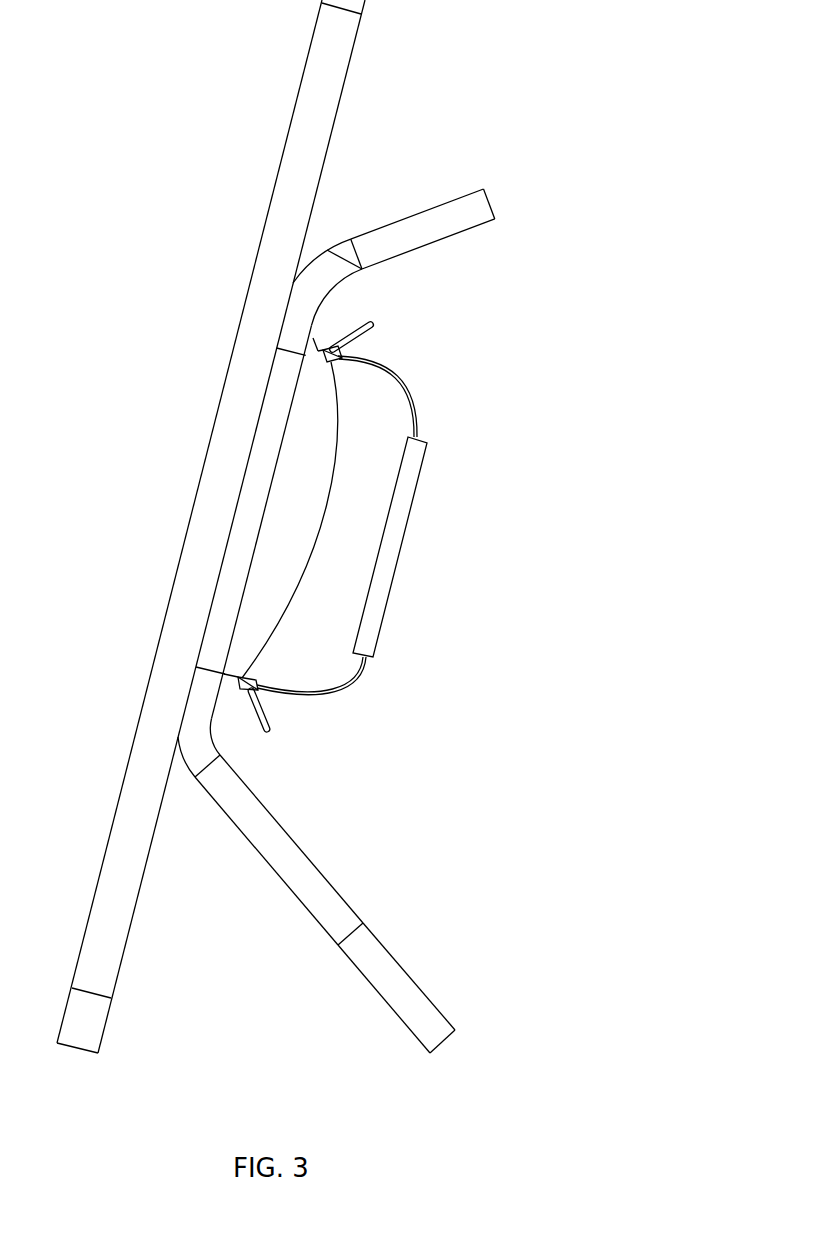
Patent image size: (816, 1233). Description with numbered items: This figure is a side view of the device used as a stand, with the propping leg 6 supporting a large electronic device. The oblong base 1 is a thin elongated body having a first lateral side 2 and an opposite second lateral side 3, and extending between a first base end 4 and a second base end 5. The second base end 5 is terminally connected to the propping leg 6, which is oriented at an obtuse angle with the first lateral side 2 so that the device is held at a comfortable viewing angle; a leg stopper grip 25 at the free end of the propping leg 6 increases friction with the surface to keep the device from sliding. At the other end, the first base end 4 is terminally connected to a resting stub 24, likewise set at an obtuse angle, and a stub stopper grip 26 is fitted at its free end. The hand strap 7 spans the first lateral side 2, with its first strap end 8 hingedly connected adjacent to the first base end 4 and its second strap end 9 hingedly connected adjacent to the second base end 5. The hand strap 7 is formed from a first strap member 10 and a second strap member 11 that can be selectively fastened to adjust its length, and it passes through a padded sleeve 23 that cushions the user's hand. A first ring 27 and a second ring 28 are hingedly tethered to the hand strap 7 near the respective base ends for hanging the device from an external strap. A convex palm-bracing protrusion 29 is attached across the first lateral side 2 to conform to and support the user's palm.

The oblong base 1 is at (230, 477).
The first lateral side 2 is at (278, 496).
The second lateral side 3 is at (225, 541).
The first base end 4 is at (296, 325).
The second base end 5 is at (194, 708).
The propping leg 6 is at (301, 881).
The hand strap 7 is at (465, 477).
The first strap end 8 is at (338, 362).
The second strap end 9 is at (256, 679).
The first strap member 10 is at (409, 393).
The second strap member 11 is at (358, 677).
The padded sleeve 23 is at (386, 598).
The resting stub 24 is at (343, 248).
The leg stopper grip 25 is at (410, 998).
The stub stopper grip 26 is at (477, 204).
The first ring 27 is at (378, 326).
The second ring 28 is at (271, 732).
The palm-bracing protrusion 29 is at (329, 457).